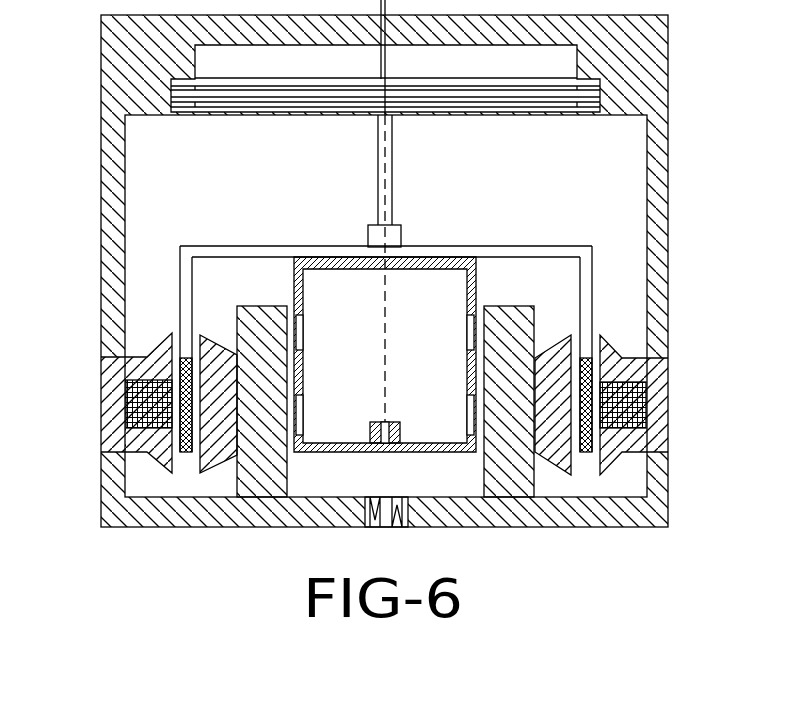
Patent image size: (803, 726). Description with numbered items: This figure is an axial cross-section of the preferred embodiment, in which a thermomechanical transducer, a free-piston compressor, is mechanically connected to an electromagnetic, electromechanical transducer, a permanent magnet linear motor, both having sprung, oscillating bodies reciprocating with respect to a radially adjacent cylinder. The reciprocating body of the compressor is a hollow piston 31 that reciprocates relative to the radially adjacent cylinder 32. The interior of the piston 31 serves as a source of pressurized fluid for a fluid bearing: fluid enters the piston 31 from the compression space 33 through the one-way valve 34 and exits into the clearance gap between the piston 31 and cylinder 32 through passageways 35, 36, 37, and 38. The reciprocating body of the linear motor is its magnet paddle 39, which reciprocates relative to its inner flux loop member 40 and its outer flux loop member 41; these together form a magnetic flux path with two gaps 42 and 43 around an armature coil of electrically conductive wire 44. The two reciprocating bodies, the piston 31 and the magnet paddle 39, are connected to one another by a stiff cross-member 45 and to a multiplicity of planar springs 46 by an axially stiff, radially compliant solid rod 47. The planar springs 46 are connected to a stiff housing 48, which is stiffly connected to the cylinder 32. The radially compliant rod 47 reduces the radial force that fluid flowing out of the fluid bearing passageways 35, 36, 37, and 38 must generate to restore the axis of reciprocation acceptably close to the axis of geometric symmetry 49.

The hollow piston 31 is at (471, 287).
The cylinder 32 is at (268, 310).
The compression space 33 is at (466, 490).
The one-way valve 34 is at (389, 452).
The passageway 35 is at (301, 408).
The passageway 36 is at (301, 328).
The passageway 37 is at (470, 408).
The passageway 38 is at (470, 328).
The magnet paddle 39 is at (183, 270).
The inner flux loop member 40 is at (215, 352).
The outer flux loop member 41 is at (115, 432).
The gap 42 is at (587, 467).
The gap 43 is at (598, 335).
The armature coil 44 is at (633, 400).
The cross-member 45 is at (268, 250).
The planar springs 46 is at (270, 97).
The solid rod 47 is at (379, 178).
The housing 48 is at (632, 68).
The axis of geometric symmetry 49 is at (390, 143).